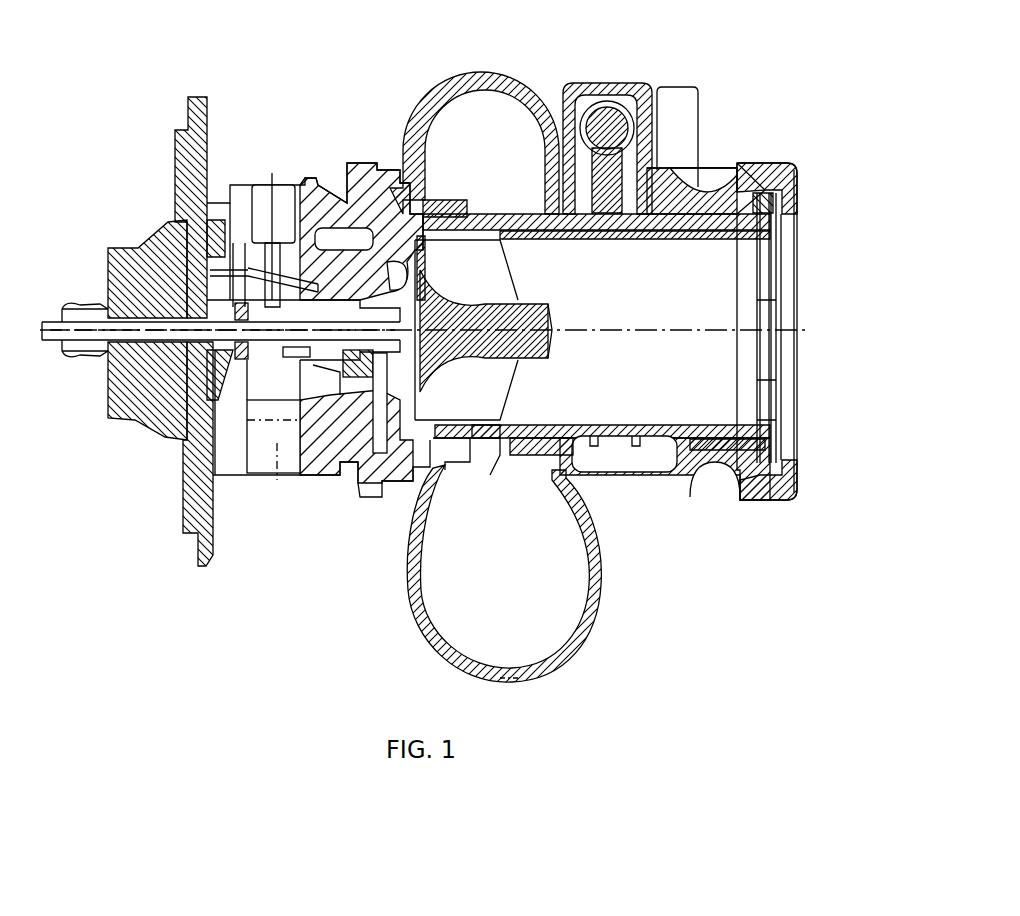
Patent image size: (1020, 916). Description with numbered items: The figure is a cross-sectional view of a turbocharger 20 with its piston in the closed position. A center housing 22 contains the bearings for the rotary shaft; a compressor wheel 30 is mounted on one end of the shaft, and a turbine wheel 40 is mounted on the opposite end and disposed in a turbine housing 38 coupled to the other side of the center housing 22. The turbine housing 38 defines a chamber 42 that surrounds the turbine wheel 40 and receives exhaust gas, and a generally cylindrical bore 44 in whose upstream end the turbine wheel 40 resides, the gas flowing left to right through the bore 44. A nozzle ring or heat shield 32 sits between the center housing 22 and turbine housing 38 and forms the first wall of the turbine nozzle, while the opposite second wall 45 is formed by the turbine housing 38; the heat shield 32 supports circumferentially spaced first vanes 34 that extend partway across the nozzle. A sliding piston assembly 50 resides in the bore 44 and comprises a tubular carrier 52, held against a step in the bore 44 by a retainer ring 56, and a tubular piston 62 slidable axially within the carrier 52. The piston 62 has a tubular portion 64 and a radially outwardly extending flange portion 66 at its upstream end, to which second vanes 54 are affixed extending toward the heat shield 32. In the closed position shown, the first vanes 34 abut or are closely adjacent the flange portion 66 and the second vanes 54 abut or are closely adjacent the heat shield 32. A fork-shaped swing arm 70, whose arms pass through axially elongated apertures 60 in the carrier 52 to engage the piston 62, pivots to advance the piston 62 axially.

The turbocharger 20 is at (756, 82).
The center housing 22 is at (312, 182).
The compressor wheel 30 is at (134, 246).
The heat shield 32 is at (447, 437).
The first vanes 34 is at (440, 464).
The turbine housing 38 is at (783, 170).
The turbine wheel 40 is at (500, 264).
The chamber 42 is at (590, 600).
The bore 44 is at (556, 438).
The second wall 45 is at (497, 437).
The sliding piston assembly 50 is at (748, 410).
The tubular carrier 52 is at (712, 444).
The second vanes 54 is at (492, 464).
The retainer ring 56 is at (775, 206).
The apertures 60 is at (652, 212).
The piston 62 is at (710, 241).
The tubular portion 64 is at (550, 412).
The flange portion 66 is at (449, 212).
The swing arm 70 is at (598, 158).